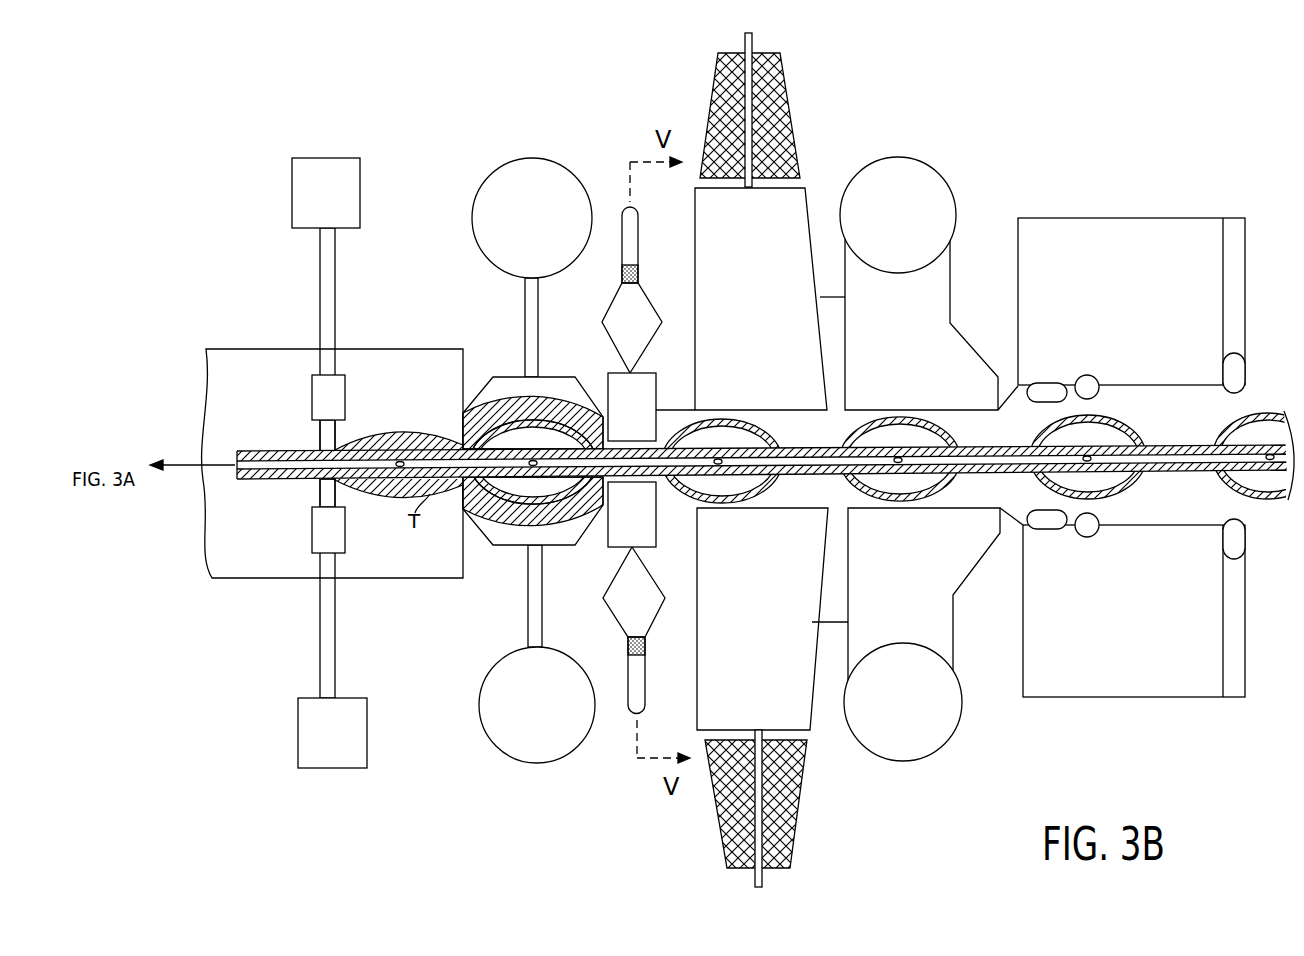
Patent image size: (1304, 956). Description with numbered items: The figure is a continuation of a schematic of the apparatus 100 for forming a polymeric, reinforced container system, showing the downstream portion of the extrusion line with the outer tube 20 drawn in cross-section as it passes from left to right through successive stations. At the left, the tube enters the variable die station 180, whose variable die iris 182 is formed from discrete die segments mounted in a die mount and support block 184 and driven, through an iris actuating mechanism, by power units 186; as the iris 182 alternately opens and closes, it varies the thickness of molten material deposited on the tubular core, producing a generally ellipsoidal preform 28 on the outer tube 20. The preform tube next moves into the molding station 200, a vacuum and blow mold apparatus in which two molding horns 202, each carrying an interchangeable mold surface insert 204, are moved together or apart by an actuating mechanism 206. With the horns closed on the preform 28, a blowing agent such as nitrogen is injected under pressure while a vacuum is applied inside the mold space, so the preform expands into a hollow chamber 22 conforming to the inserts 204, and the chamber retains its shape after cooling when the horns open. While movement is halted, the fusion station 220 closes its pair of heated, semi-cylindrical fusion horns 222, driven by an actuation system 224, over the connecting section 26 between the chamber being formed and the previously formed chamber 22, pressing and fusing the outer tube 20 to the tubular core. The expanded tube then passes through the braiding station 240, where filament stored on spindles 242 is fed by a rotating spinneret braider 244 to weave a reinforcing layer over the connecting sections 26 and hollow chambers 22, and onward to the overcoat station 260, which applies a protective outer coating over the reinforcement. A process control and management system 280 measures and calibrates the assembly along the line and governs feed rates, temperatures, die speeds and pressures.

The outer tube 20 is at (265, 483).
The hollow chamber 22 is at (495, 528).
The connecting section 26 is at (818, 478).
The preform 28 is at (400, 435).
The apparatus 100 is at (1036, 107).
The variable die station 180 is at (320, 292).
The variable die iris 182 is at (320, 440).
The die mount and support block 184 is at (312, 397).
The power unit 186 is at (360, 193).
The molding station 200 is at (525, 290).
The molding horn 202 is at (555, 377).
The mold surface insert 204 is at (508, 394).
The actuating mechanism 206 is at (530, 158).
The fusion station 220 is at (639, 460).
The fusion horn 222 is at (657, 398).
The actuation system 224 is at (622, 300).
The braiding station 240 is at (754, 443).
The spindle 242 is at (782, 76).
The spinneret braider 244 is at (812, 172).
The overcoat station 260 is at (890, 157).
The process control and management system 280 is at (1160, 218).